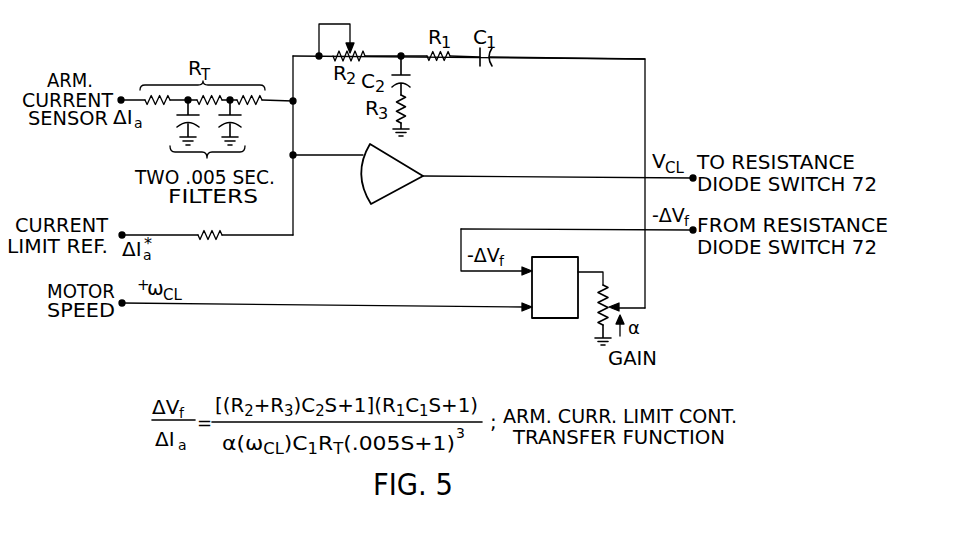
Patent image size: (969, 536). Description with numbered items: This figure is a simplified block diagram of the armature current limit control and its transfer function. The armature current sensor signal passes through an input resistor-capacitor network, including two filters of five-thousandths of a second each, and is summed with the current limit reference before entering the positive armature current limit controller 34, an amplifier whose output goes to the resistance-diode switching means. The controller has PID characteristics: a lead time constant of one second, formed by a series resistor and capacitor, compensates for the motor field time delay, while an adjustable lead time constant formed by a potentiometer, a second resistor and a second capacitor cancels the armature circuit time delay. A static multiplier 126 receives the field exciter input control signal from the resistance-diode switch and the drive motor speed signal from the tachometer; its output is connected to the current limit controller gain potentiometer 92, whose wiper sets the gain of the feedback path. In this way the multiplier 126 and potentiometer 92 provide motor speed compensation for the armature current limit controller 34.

The positive armature current limit controller 34 is at (359, 208).
The static multiplier 126 is at (571, 258).
The current limit controller gain potentiometer 92 is at (606, 296).